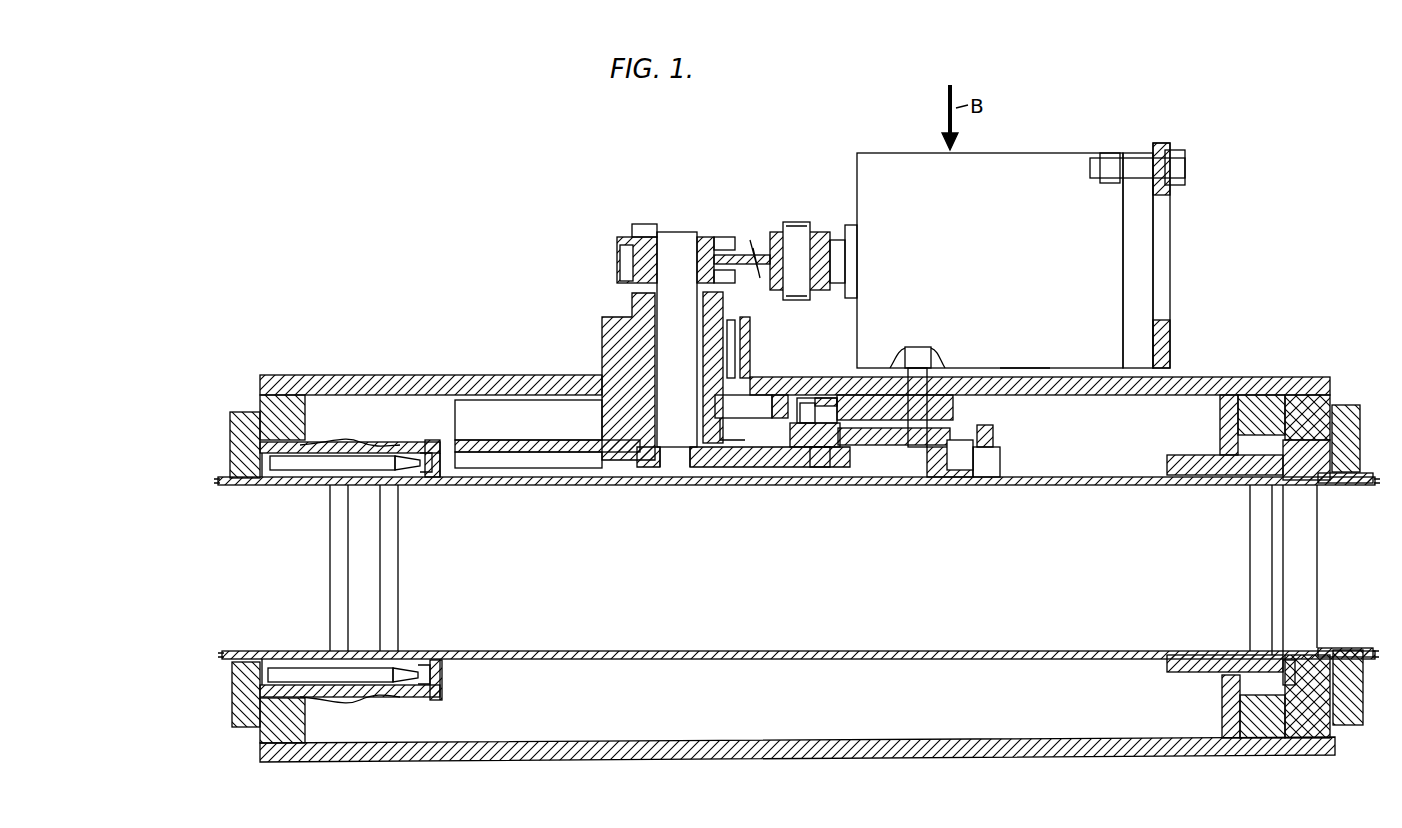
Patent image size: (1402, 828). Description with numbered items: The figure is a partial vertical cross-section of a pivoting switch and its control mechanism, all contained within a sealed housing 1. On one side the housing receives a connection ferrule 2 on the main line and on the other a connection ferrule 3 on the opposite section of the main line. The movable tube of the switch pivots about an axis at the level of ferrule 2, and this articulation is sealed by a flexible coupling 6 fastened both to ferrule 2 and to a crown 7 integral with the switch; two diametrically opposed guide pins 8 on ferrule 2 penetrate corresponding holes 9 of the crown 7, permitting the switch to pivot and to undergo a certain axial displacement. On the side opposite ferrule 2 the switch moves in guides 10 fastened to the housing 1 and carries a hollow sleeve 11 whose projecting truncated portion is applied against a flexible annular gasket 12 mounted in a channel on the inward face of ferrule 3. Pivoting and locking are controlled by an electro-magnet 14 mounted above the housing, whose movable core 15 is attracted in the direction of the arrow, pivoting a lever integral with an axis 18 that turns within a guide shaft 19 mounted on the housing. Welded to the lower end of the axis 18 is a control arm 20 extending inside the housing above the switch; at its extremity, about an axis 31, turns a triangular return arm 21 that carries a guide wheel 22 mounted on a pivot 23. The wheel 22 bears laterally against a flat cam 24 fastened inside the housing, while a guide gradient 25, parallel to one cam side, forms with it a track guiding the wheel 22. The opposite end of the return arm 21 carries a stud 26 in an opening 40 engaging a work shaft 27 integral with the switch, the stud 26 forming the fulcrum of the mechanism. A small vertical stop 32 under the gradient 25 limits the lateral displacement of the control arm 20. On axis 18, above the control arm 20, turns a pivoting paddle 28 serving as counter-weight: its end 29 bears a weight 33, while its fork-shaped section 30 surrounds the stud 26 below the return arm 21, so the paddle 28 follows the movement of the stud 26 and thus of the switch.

The sealed housing 1 is at (612, 757).
The connection ferrule 2 is at (262, 690).
The connection ferrule 3 is at (1342, 452).
The flexible coupling 6 is at (365, 692).
The crown 7 is at (410, 692).
The guide pins 8 is at (355, 465).
The holes 9 is at (414, 460).
The guides 10 is at (1226, 706).
The hollow sleeve 11 is at (1200, 673).
The flexible annular gasket 12 is at (1290, 662).
The electro-magnet 14 is at (1090, 236).
The movable core 15 is at (850, 232).
The axis 18 is at (640, 250).
The guide shaft 19 is at (625, 332).
The control arm 20 is at (718, 456).
The return arm 21 is at (962, 442).
The guide wheel 22 is at (800, 405).
The pivot 23 is at (818, 400).
The flat cam 24 is at (876, 392).
The guide gradient 25 is at (777, 397).
The stud 26 is at (996, 446).
The work shaft 27 is at (935, 472).
The pivoting paddle 28 is at (742, 445).
The end 29 is at (463, 445).
The fork-shaped section 30 is at (1003, 462).
The axis 31 is at (812, 440).
The vertical stop 32 is at (722, 658).
The weight 33 is at (490, 412).
The opening 40 is at (1010, 364).